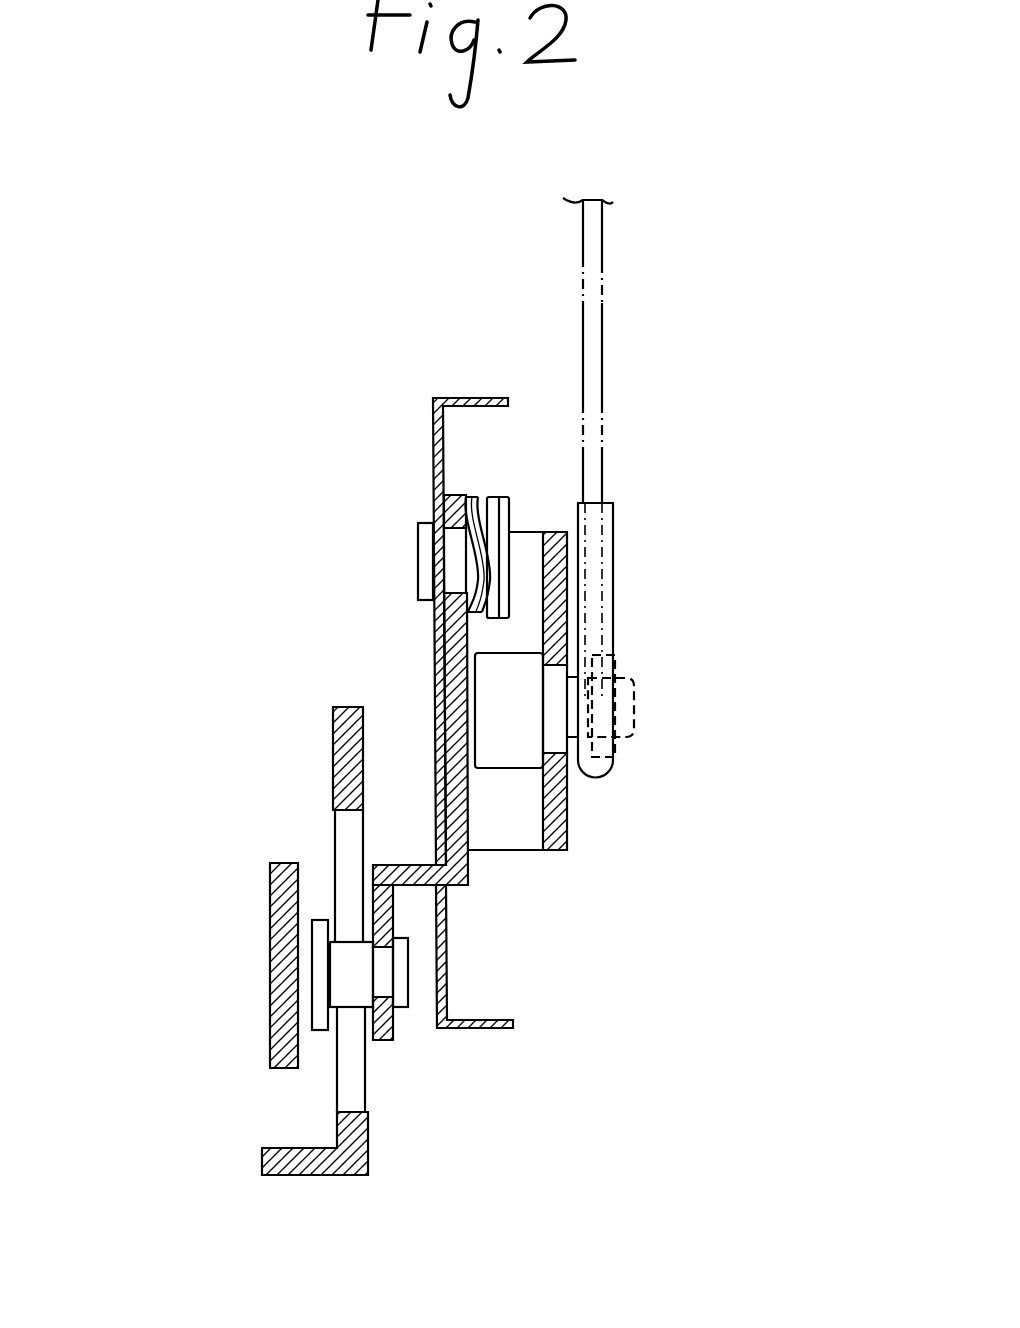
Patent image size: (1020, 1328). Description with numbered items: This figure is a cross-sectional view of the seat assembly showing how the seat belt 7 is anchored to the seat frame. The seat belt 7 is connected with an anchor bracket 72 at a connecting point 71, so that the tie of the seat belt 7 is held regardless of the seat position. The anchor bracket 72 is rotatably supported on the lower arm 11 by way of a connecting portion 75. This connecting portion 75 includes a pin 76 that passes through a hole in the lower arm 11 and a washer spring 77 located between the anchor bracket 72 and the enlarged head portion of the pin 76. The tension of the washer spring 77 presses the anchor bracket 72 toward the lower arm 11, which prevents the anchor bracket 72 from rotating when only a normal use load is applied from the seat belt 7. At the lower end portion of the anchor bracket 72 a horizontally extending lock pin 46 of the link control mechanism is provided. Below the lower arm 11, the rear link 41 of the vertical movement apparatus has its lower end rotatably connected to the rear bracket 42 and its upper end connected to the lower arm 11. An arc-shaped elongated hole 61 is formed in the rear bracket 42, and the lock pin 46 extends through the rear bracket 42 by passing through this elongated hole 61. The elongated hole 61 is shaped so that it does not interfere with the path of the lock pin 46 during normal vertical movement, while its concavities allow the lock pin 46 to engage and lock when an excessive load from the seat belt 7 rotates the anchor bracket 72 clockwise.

The seat belt 7 is at (602, 263).
The lower arm 11 is at (430, 448).
The rear link 41 is at (273, 1018).
The rear bracket 42 is at (347, 752).
The lock pin 46 is at (347, 965).
The elongated hole 61 is at (347, 845).
The connecting point 71 is at (620, 708).
The anchor bracket 72 is at (410, 863).
The connecting portion 75 is at (523, 510).
The pin 76 is at (500, 497).
The washer spring 77 is at (473, 493).